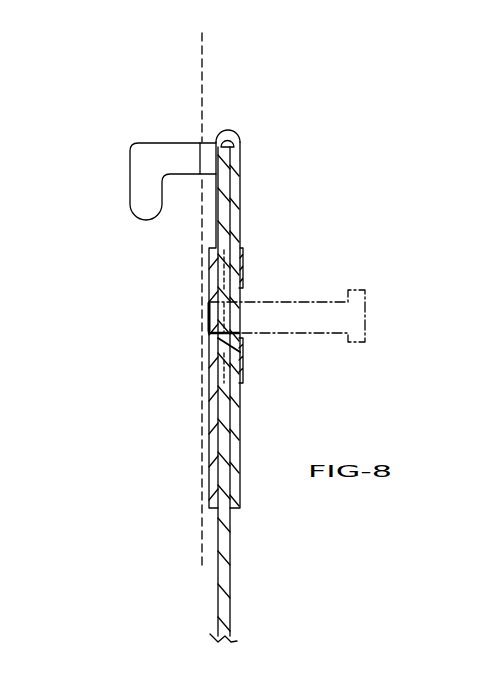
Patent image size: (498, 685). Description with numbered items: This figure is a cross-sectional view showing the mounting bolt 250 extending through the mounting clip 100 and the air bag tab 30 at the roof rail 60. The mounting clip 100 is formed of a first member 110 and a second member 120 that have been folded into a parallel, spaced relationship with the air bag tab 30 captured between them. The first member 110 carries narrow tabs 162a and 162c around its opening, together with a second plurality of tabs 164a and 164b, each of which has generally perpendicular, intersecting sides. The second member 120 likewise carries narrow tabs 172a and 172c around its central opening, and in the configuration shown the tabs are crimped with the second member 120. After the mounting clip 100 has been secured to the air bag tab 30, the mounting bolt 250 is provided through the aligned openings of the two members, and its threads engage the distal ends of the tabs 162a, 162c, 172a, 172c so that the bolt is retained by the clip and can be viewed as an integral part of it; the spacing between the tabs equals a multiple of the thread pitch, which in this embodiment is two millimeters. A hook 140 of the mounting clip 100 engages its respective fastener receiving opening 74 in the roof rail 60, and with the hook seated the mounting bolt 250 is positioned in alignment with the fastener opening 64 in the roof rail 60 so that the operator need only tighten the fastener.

The air bag tab 30 is at (229, 572).
The roof rail 60 is at (200, 44).
The fastener opening 64 is at (210, 332).
The fastener receiving opening 74 is at (202, 139).
The mounting clip 100 is at (233, 128).
The first member 110 is at (210, 408).
The second member 120 is at (241, 406).
The hook 140 is at (142, 190).
The narrow tab 162a is at (213, 342).
The narrow tab 162c is at (212, 295).
The tab of second plurality 164a is at (243, 379).
The tab of second plurality 164b is at (243, 259).
The narrow tab 172a is at (238, 340).
The narrow tab 172c is at (240, 285).
The mounting bolt 250 is at (322, 301).